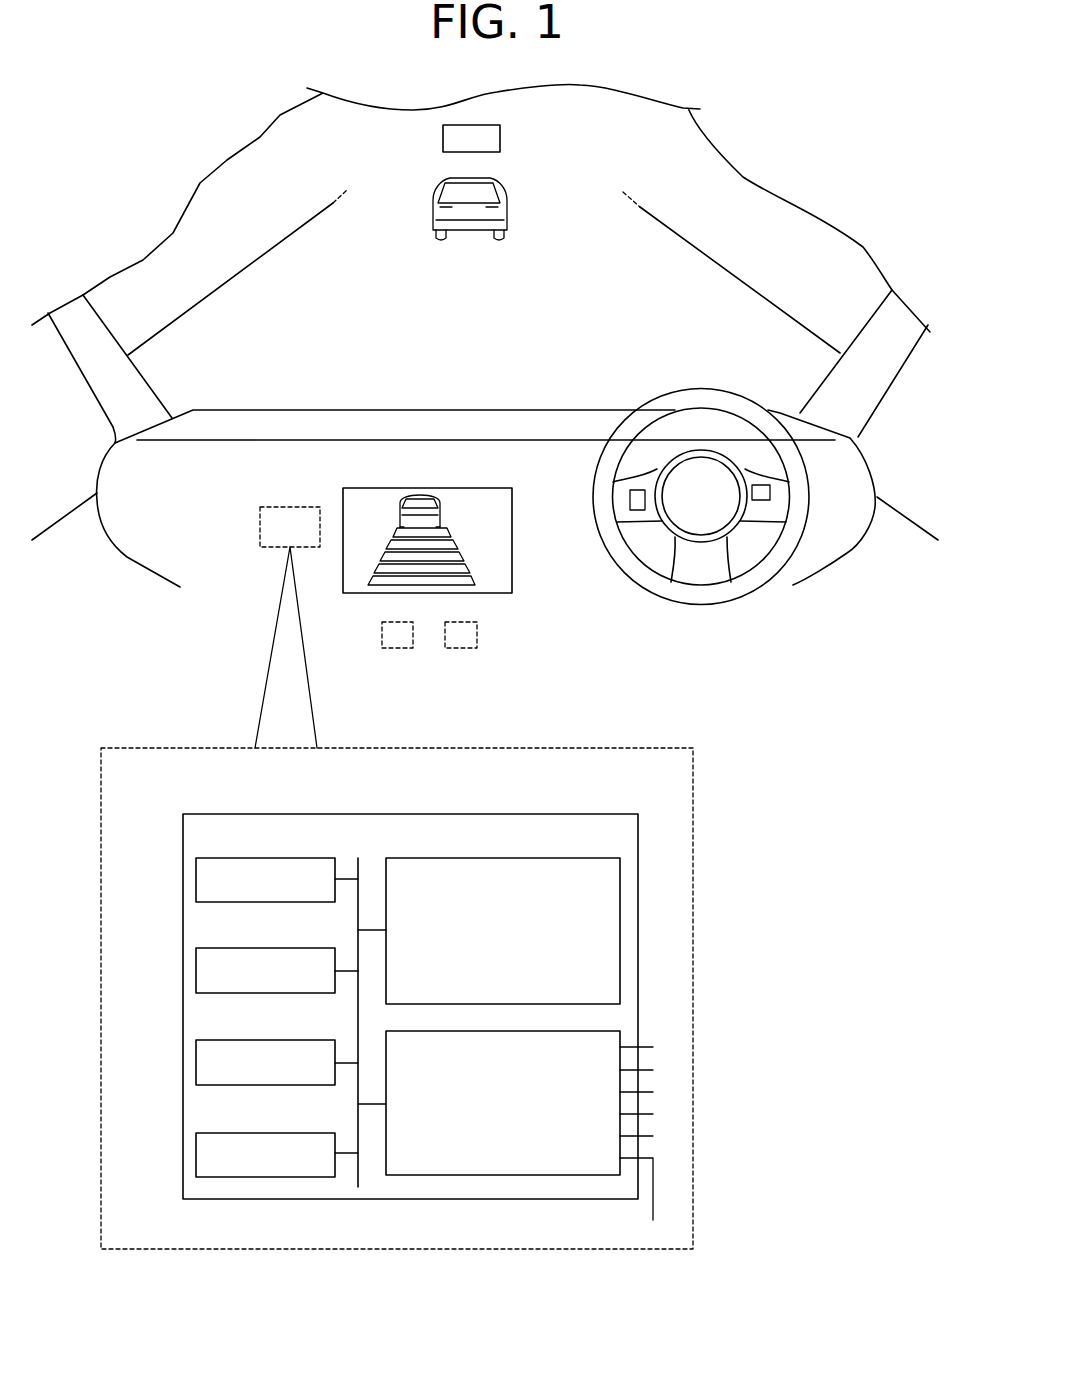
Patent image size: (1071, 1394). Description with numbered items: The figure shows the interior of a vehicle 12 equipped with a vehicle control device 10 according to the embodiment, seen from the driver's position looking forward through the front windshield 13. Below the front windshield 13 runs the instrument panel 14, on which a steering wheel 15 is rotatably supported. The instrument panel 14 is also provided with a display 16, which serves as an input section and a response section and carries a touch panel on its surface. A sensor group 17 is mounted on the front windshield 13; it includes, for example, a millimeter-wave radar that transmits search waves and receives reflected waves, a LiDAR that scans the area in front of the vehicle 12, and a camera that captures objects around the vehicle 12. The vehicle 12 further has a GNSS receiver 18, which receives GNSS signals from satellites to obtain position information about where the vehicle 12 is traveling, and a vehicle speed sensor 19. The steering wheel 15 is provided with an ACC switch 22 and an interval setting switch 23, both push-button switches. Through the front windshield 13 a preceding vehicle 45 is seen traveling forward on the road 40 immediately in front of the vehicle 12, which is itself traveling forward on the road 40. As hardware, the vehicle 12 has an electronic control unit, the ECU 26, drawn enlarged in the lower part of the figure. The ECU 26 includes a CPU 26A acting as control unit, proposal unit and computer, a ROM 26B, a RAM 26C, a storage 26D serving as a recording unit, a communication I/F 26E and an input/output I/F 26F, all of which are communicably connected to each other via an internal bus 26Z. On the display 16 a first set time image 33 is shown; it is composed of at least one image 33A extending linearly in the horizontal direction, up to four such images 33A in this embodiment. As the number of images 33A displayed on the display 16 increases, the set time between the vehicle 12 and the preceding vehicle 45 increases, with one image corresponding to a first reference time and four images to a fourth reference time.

The vehicle control device 10 is at (193, 554).
The vehicle 12 is at (133, 217).
The front windshield 13 is at (842, 323).
The instrument panel 14 is at (272, 420).
The steering wheel 15 is at (770, 566).
The display 16 is at (512, 570).
The sensor group 17 is at (500, 134).
The GNSS receiver 18 is at (393, 652).
The vehicle speed sensor 19 is at (453, 652).
The ACC switch 22 is at (638, 510).
The interval setting switch 23 is at (770, 490).
The Electronic Control Unit (ECU) 26 is at (260, 528).
The CPU 26A is at (220, 858).
The ROM 26B is at (220, 948).
The RAM 26C is at (220, 1040).
The storage 26D is at (220, 1133).
The communication I/F 26E is at (507, 858).
The input/output I/F 26F is at (505, 1177).
The internal bus 26Z is at (358, 867).
The first set time image 33 is at (470, 508).
The image 33A is at (452, 525).
The road 40 is at (710, 283).
The preceding vehicle 45 is at (503, 200).